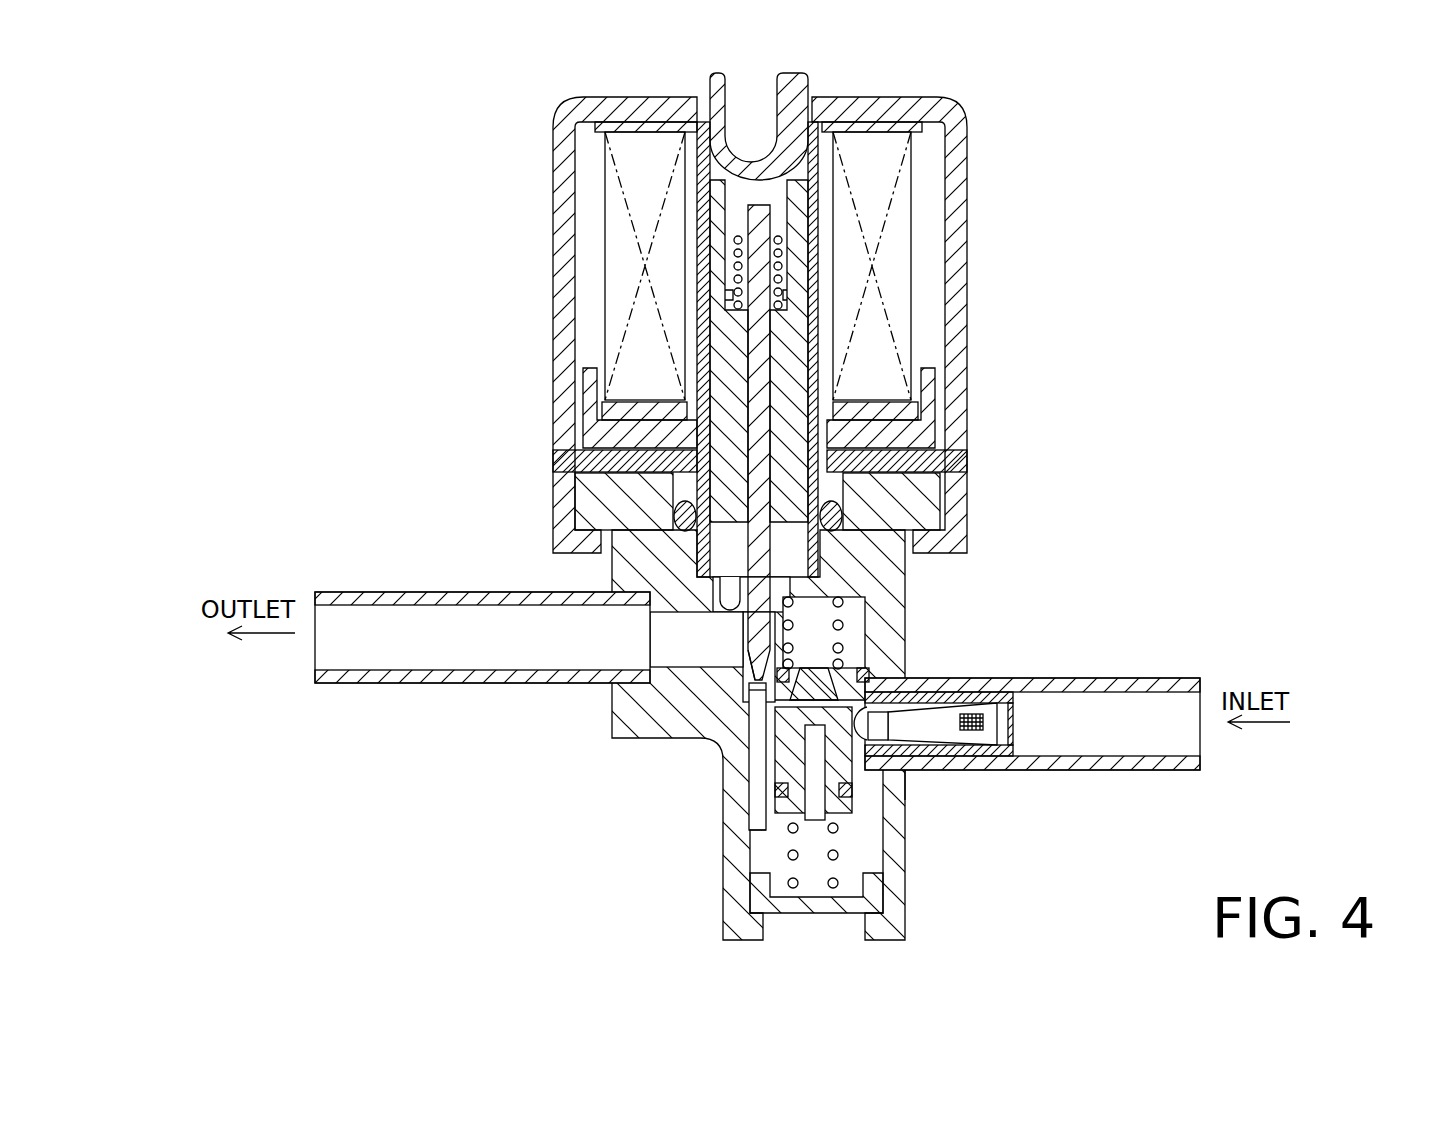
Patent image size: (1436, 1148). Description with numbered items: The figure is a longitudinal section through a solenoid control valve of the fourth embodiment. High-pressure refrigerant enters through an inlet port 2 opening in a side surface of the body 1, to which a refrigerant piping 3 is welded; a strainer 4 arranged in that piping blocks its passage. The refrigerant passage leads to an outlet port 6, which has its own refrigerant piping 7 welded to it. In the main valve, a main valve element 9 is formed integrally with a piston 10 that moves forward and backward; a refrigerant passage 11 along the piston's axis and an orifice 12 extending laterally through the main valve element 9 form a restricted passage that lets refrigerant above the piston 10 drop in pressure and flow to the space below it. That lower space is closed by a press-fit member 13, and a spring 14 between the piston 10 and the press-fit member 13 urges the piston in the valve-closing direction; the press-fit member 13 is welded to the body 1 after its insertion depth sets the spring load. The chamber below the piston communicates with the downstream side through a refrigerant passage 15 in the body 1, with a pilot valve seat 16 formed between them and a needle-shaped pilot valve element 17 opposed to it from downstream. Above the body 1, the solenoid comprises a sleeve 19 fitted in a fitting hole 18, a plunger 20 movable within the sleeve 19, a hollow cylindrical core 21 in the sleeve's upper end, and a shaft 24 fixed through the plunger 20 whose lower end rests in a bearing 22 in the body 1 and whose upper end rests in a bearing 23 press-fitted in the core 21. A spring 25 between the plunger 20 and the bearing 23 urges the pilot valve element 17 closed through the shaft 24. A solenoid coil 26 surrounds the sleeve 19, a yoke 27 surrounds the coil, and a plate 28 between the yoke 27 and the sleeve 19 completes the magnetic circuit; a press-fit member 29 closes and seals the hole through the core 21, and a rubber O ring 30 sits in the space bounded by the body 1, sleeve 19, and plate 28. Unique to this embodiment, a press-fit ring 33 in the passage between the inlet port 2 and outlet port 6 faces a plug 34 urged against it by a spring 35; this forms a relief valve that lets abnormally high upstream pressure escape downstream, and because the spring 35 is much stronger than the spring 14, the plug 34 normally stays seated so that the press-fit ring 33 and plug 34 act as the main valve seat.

The body 1 is at (905, 565).
The inlet port 2 is at (905, 790).
The refrigerant piping 3 is at (1150, 678).
The strainer 4 is at (1007, 720).
The outlet port 6 is at (620, 668).
The refrigerant piping 7 is at (372, 592).
The main valve element 9 is at (783, 718).
The piston 10 is at (808, 800).
The refrigerant passage 11 is at (778, 792).
The orifice 12 is at (890, 785).
The press-fit member 13 is at (815, 905).
The spring 14 is at (838, 855).
The refrigerant passage 15 is at (757, 843).
The pilot valve seat 16 is at (752, 690).
The pilot valve element 17 is at (740, 660).
The fitting hole 18 is at (610, 543).
The sleeve 19 is at (845, 548).
The plunger 20 is at (802, 323).
The core 21 is at (813, 165).
The bearing 22 is at (728, 598).
The bearing 23 is at (778, 226).
The shaft 24 is at (755, 345).
The spring 25 is at (782, 258).
The solenoid coil 26 is at (617, 232).
The yoke 27 is at (967, 368).
The plate 28 is at (965, 462).
The press-fit member 29 is at (740, 80).
The O ring 30 is at (842, 516).
The press-fit ring 33 is at (862, 670).
The plug 34 is at (860, 650).
The spring 35 is at (855, 612).